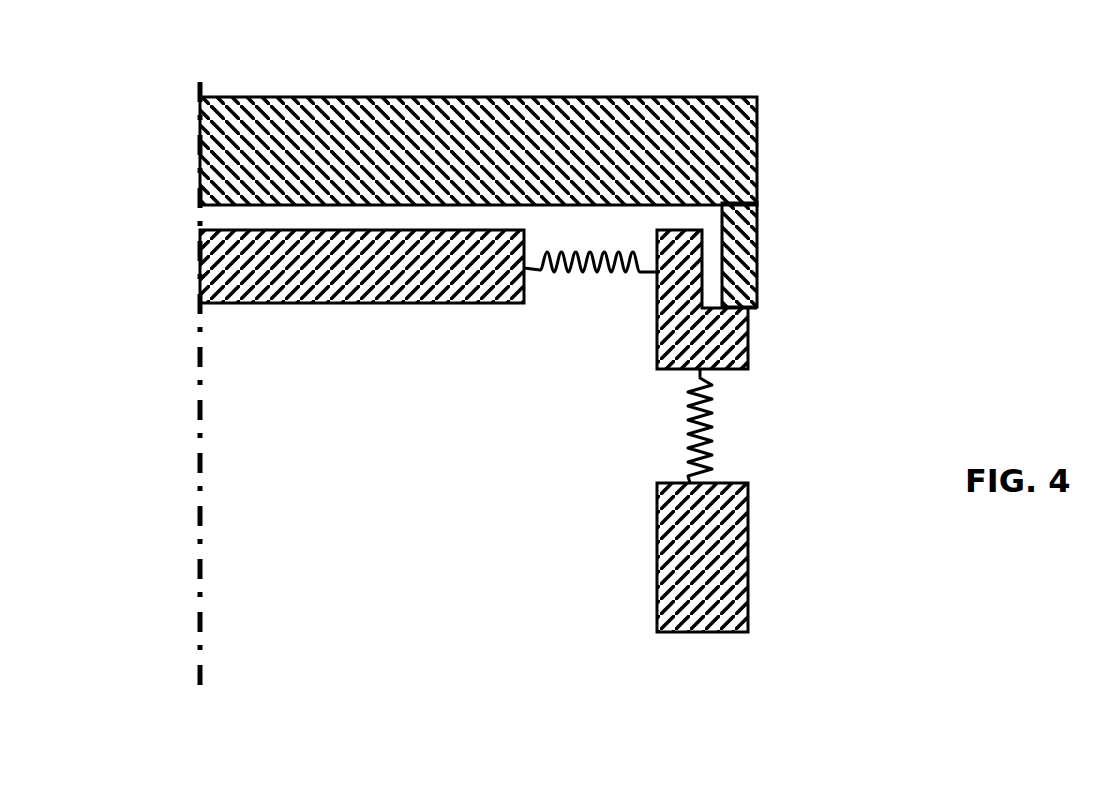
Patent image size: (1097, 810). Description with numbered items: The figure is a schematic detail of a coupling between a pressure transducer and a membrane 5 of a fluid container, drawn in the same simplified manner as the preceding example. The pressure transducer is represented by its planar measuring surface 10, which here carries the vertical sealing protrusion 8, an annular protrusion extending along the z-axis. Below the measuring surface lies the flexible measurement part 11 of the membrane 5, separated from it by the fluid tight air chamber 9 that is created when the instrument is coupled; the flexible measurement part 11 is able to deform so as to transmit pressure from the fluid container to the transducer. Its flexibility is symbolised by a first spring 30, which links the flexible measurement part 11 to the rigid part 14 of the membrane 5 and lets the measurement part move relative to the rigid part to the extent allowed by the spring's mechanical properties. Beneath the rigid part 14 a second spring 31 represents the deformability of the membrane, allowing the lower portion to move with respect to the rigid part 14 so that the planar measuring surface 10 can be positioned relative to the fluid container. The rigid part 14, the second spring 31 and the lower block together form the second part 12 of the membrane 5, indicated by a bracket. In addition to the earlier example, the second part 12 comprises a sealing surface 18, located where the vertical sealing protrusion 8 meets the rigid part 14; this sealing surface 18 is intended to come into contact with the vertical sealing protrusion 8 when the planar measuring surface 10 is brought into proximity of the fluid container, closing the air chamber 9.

The membrane 5 is at (648, 331).
The vertical sealing protrusion 8 is at (740, 250).
The fluid tight air chamber 9 is at (239, 212).
The planar measuring surface 10 is at (458, 101).
The flexible measurement part 11 is at (283, 275).
The second part 12 is at (875, 232).
The rigid part 14 is at (722, 333).
The sealing surface 18 is at (755, 316).
The first spring 30 is at (572, 276).
The second spring 31 is at (722, 422).